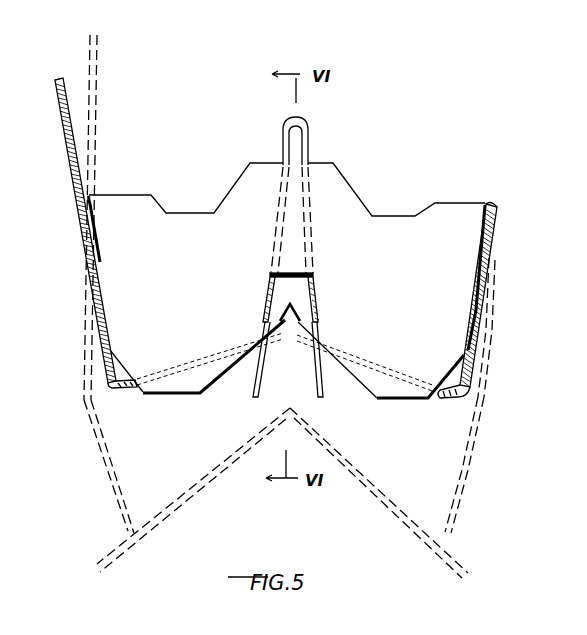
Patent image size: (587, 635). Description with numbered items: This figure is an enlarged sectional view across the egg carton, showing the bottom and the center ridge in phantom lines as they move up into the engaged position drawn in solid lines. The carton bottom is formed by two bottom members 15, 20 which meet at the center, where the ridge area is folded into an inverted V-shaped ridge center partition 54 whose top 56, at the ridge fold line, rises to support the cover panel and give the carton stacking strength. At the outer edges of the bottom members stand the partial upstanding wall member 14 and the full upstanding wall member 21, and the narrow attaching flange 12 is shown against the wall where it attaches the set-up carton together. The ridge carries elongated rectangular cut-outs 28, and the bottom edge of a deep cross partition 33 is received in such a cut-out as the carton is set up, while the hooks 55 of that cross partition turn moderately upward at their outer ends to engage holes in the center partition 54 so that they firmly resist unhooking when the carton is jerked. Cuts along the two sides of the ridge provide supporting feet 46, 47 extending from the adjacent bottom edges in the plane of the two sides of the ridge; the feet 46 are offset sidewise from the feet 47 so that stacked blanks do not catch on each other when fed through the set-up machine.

The attaching flange 12 is at (96, 226).
The partial upstanding wall member 14 is at (498, 232).
The bottom member 15 is at (440, 400).
The bottom member 20 is at (132, 388).
The full upstanding wall member 21 is at (83, 232).
The cut-outs 28 is at (312, 277).
The deep cross partition 33 is at (397, 326).
The supporting feet 46 is at (315, 378).
The supporting feet 47 is at (259, 386).
The inverted V-shaped ridge center partition 54 is at (307, 147).
The hooks 55 is at (284, 316).
The top 56 is at (290, 117).